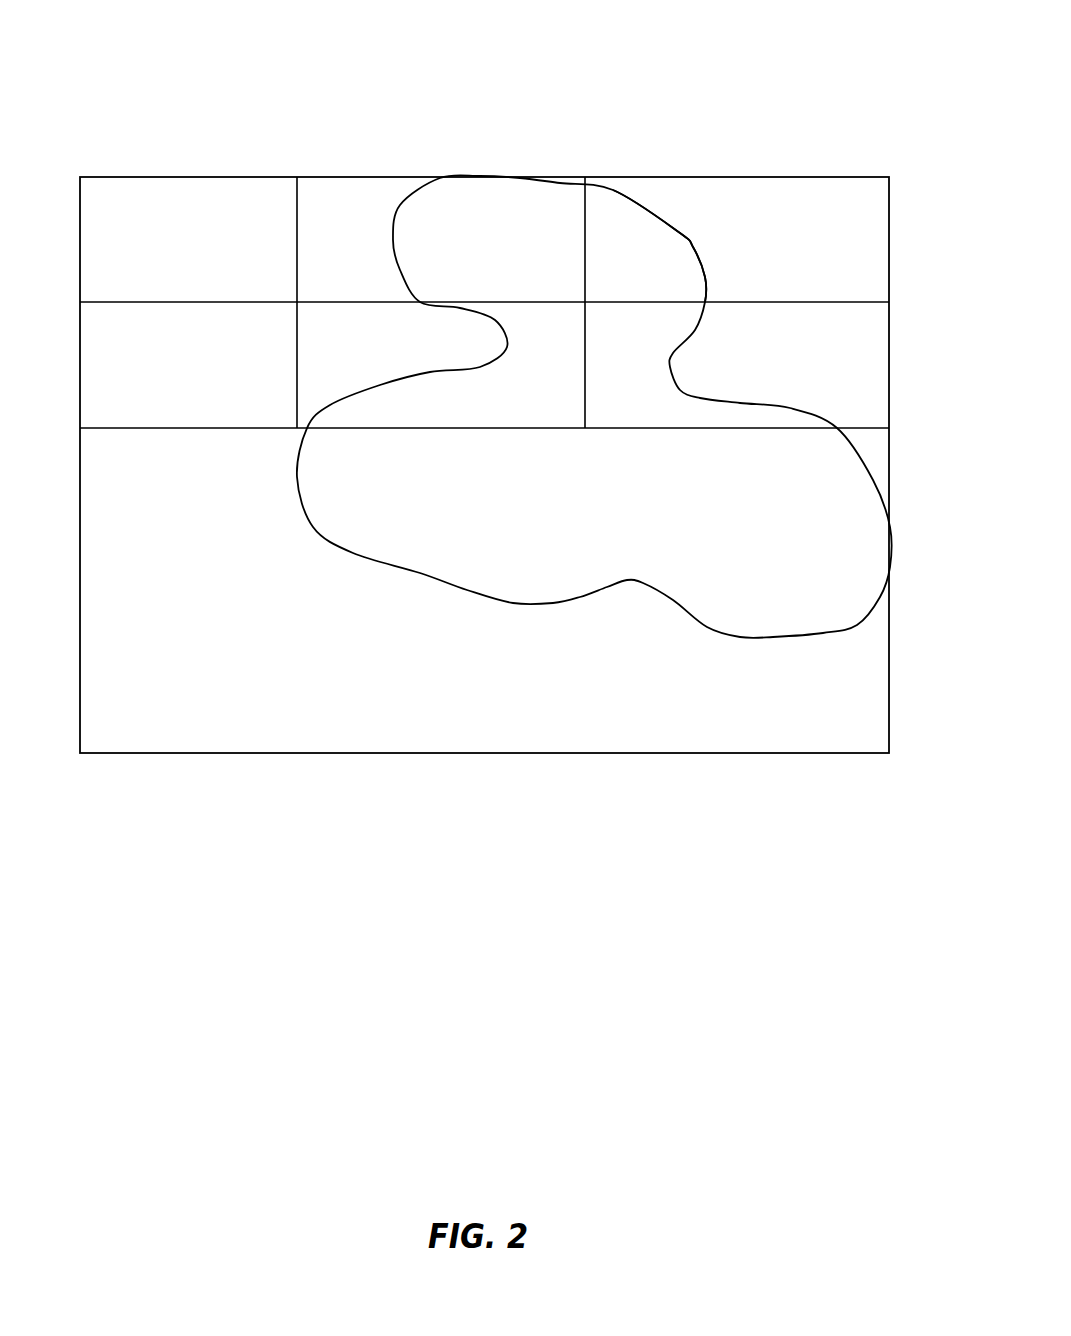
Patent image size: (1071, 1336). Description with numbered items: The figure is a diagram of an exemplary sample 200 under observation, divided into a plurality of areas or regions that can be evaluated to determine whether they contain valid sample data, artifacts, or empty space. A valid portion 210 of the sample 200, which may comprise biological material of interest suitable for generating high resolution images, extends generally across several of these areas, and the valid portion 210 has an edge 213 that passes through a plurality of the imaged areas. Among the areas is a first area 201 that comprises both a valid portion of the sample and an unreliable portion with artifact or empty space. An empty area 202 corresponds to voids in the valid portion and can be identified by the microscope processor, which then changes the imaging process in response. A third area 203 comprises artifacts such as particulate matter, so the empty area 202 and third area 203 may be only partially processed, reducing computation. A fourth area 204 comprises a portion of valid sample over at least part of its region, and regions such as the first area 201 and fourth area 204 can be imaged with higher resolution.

The sample 200 is at (674, 89).
The first area 201 is at (332, 205).
The empty area 202 is at (233, 208).
The third area 203 is at (130, 405).
The fourth area 204 is at (887, 208).
The valid portion 210 is at (525, 222).
The edge 213 is at (707, 280).